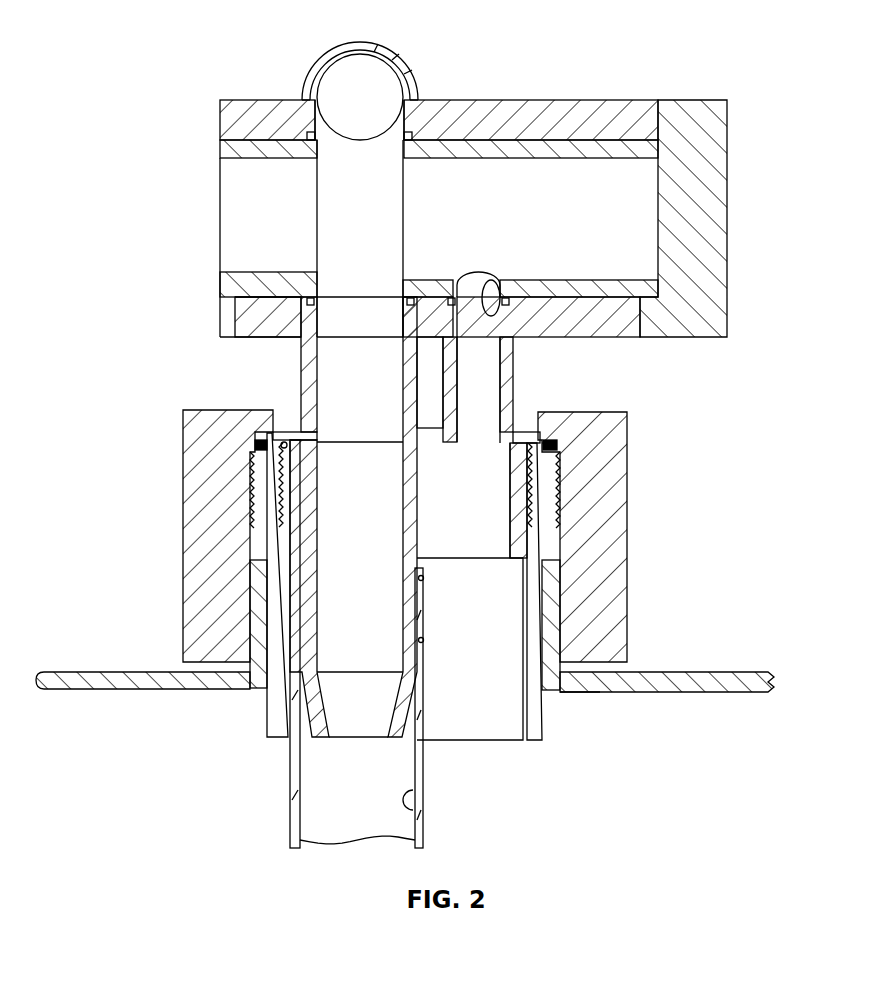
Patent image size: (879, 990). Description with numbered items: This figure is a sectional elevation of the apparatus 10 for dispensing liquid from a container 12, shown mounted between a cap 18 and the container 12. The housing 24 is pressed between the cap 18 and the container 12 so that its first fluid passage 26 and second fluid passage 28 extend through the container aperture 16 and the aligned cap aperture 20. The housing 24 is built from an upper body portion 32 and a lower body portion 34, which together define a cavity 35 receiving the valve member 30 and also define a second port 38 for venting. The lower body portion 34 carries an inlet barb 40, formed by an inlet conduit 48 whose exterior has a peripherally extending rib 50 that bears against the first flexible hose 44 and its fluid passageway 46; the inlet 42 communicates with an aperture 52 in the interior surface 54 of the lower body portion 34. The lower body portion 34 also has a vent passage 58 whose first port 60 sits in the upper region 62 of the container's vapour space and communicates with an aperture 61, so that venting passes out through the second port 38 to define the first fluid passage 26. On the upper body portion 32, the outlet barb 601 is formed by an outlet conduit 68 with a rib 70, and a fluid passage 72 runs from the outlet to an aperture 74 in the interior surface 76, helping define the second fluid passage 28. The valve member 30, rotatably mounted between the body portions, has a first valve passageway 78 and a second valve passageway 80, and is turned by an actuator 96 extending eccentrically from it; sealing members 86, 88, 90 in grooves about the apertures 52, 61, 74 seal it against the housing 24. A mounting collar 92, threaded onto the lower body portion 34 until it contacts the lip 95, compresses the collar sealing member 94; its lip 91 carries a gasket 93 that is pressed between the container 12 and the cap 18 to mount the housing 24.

The apparatus 10 is at (110, 225).
The container 12 is at (708, 672).
The container aperture 16 is at (275, 688).
The cap 18 is at (223, 410).
The cap aperture 20 is at (278, 412).
The housing 24 is at (563, 66).
The first fluid passage 26 is at (552, 373).
The second fluid passage 28 is at (263, 354).
The valve member 30 is at (588, 124).
The upper body portion 32 is at (247, 100).
The lower body portion 34 is at (240, 312).
The cavity 35 is at (245, 285).
The second port 38 is at (237, 190).
The inlet barb 40 is at (428, 534).
The inlet 42 is at (355, 722).
The first flexible hose 44 is at (292, 790).
The fluid passageway 46 is at (420, 800).
The inlet conduit 48 is at (418, 463).
The peripherally extending rib 50 is at (423, 578).
The aperture 52 is at (313, 310).
The interior surface 54 is at (280, 296).
The vent passage 58 is at (513, 388).
The first port 60 is at (482, 434).
The aperture 61 is at (494, 282).
The upper region 62 is at (655, 742).
The outlet conduit 68 is at (360, 43).
The peripherally extending rib 70 is at (418, 79).
The fluid passage 72 is at (392, 113).
The aperture 74 is at (318, 97).
The interior surface 76 is at (448, 148).
The first valve passageway 78 is at (470, 273).
The second valve passageway 80 is at (402, 278).
The sealing member 86 is at (402, 302).
The sealing member 88 is at (452, 300).
The sealing member 90 is at (318, 118).
The lip 91 is at (558, 443).
The mounting collar 92 is at (557, 482).
The gasket 93 is at (557, 462).
The collar sealing member 94 is at (286, 443).
The lip 95 is at (253, 441).
The actuator 96 is at (748, 186).
The outlet barb 601 is at (432, 61).